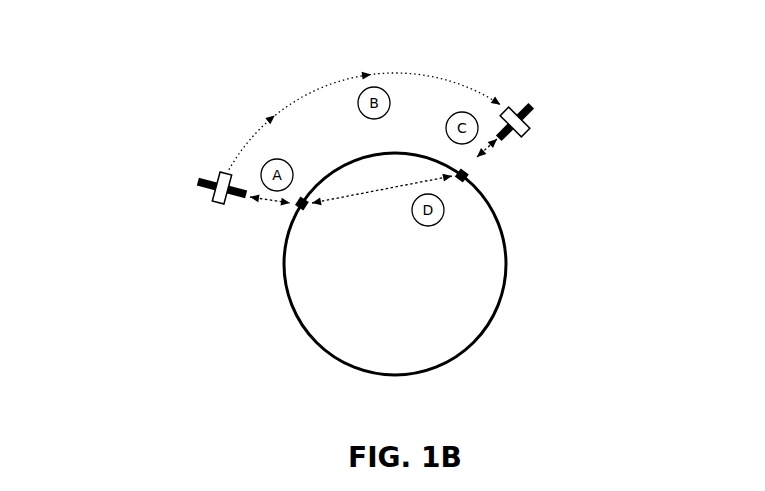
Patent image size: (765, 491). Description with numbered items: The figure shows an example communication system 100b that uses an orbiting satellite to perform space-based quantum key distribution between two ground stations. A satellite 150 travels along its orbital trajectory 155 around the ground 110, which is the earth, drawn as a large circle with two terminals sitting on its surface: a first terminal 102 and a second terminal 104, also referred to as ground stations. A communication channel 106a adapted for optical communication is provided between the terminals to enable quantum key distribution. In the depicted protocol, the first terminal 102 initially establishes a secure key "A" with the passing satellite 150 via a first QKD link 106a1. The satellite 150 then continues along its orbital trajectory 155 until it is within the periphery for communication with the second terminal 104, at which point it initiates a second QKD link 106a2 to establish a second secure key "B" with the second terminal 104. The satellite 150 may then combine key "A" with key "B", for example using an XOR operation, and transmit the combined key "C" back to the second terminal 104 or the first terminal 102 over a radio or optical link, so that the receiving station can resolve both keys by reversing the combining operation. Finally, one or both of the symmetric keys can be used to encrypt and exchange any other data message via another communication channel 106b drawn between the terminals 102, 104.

The communication system 100b is at (150, 82).
The satellite 150 is at (205, 160).
The orbital trajectory 155 is at (330, 87).
The communication channel 106a is at (347, 136).
The first QKD link 106a1 is at (262, 203).
The second QKD link 106a2 is at (486, 151).
The communication channel 106b is at (378, 206).
The first terminal 102 is at (296, 212).
The second terminal 104 is at (474, 178).
The ground 110 is at (411, 275).